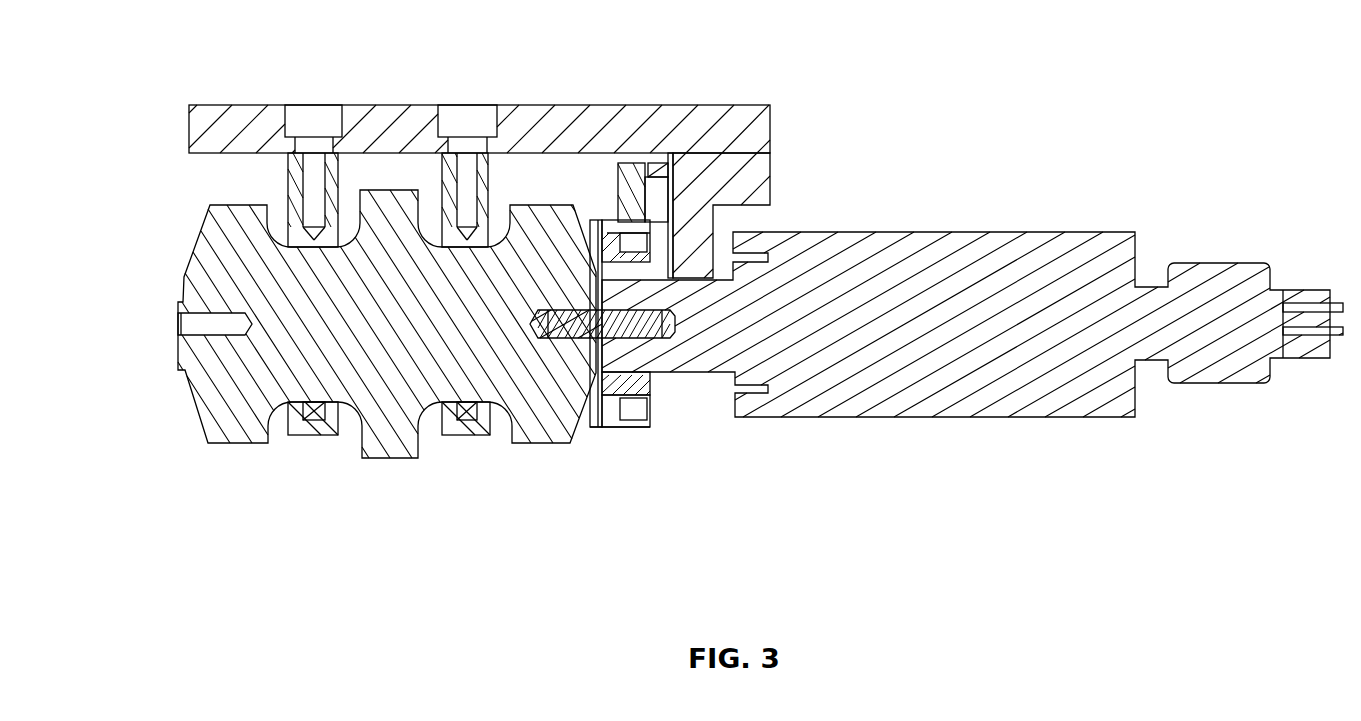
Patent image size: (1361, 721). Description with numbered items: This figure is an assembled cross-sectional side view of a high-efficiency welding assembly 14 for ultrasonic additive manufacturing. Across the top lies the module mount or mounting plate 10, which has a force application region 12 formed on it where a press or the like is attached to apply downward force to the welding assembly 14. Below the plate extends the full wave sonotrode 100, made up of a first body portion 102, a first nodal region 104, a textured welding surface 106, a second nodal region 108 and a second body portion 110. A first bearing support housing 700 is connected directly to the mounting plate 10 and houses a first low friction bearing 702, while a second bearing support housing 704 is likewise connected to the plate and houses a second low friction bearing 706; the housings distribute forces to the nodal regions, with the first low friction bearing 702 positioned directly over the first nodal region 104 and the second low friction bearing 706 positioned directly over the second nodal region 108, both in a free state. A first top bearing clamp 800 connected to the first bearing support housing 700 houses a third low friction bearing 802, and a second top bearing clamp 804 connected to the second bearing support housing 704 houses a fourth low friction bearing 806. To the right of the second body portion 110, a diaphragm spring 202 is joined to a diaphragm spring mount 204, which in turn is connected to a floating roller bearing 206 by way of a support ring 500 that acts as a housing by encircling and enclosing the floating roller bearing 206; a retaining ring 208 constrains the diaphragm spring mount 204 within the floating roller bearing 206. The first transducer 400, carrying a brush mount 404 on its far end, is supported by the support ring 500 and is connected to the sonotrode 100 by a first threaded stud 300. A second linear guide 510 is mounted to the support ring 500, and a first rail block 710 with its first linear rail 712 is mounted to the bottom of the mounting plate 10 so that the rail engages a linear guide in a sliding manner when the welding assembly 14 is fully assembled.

The mounting plate 10 is at (187, 132).
The force application region 12 is at (392, 105).
The welding assembly 14 is at (472, 565).
The full wave sonotrode 100 is at (173, 325).
The first body portion 102 is at (232, 450).
The first nodal region 104 is at (330, 437).
The textured welding surface 106 is at (393, 458).
The second nodal region 108 is at (483, 435).
The second body portion 110 is at (550, 450).
The diaphragm spring 202 is at (598, 430).
The diaphragm spring mount 204 is at (620, 428).
The floating roller bearing 206 is at (640, 425).
The retaining ring 208 is at (771, 160).
The first threaded stud 300 is at (662, 340).
The first transducer 400 is at (937, 291).
The brush mount 404 is at (1213, 268).
The support ring 500 is at (633, 163).
The second linear guide 510 is at (676, 190).
The first bearing support housing 700 is at (288, 190).
The first low friction bearing 702 is at (313, 227).
The second bearing support housing 704 is at (490, 200).
The second low friction bearing 706 is at (443, 197).
The first rail block 710 is at (673, 217).
The first linear rail 712 is at (672, 163).
The first top bearing clamp 800 is at (295, 438).
The third low friction bearing 802 is at (313, 438).
The second top bearing clamp 804 is at (450, 435).
The fourth low friction bearing 806 is at (477, 435).